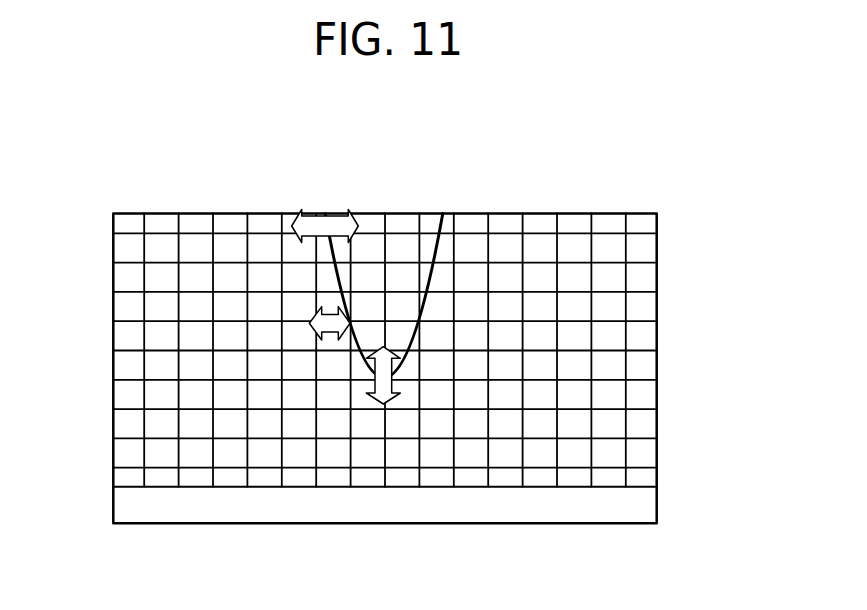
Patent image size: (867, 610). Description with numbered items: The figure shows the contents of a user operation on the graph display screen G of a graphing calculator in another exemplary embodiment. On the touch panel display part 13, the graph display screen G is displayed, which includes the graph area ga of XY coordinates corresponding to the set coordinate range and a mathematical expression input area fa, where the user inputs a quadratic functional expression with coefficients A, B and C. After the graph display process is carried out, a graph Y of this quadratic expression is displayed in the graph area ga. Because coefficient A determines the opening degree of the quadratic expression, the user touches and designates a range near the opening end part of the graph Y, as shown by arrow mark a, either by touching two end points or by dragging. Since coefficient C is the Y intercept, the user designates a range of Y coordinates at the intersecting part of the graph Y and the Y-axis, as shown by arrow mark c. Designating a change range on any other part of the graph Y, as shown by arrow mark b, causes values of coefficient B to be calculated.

The touch panel display part 13 is at (648, 278).
The graph area ga is at (118, 340).
The mathematical expression input area fa is at (238, 515).
The graph Y is at (436, 253).
The arrow mark a is at (313, 214).
The arrow mark b is at (332, 317).
The arrow mark c is at (386, 385).